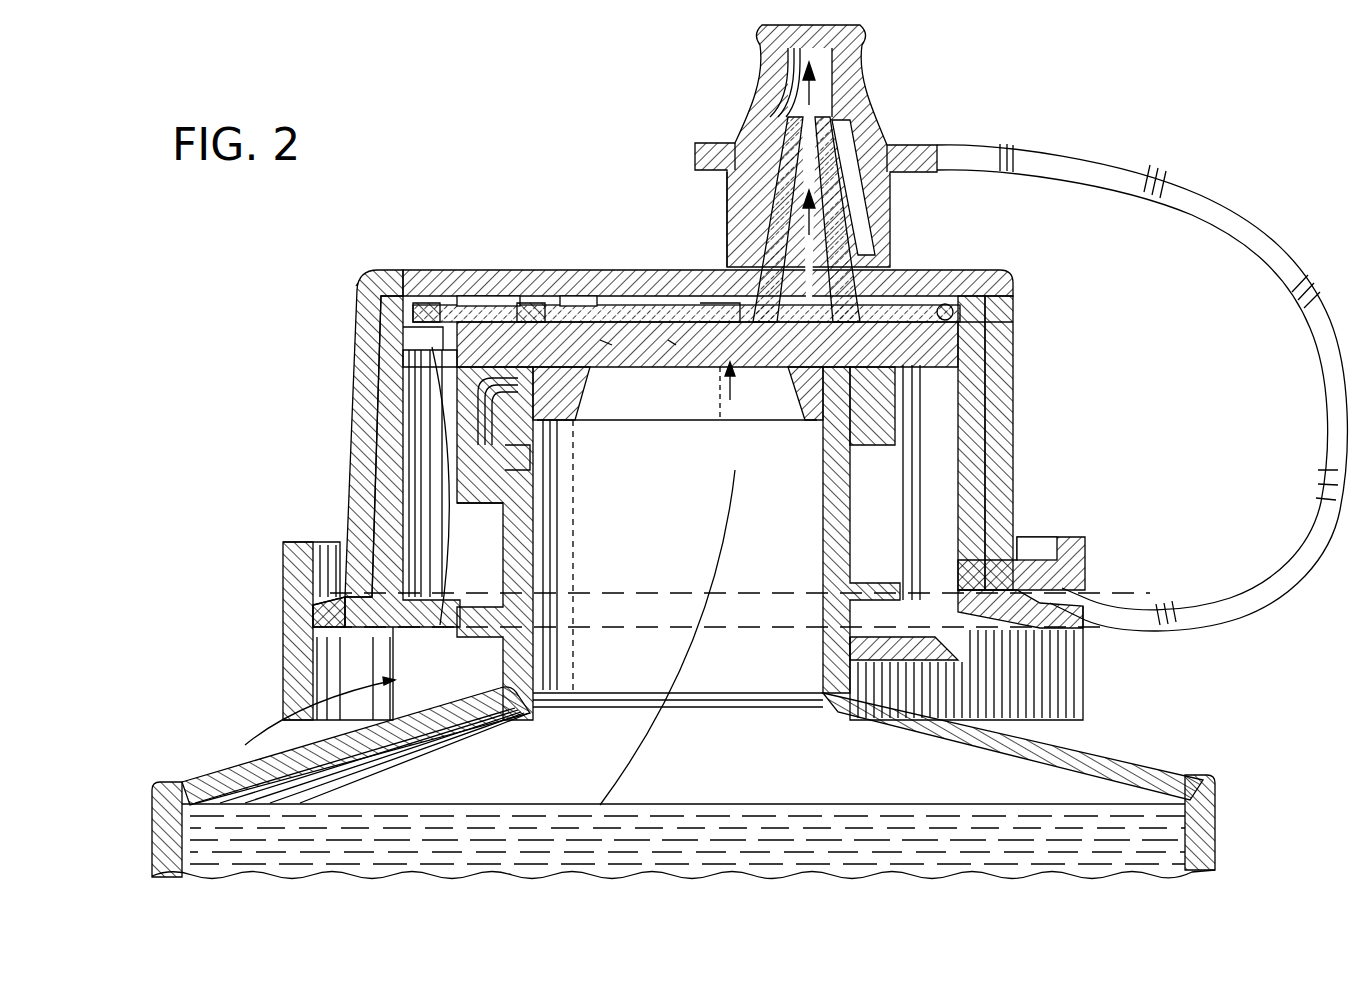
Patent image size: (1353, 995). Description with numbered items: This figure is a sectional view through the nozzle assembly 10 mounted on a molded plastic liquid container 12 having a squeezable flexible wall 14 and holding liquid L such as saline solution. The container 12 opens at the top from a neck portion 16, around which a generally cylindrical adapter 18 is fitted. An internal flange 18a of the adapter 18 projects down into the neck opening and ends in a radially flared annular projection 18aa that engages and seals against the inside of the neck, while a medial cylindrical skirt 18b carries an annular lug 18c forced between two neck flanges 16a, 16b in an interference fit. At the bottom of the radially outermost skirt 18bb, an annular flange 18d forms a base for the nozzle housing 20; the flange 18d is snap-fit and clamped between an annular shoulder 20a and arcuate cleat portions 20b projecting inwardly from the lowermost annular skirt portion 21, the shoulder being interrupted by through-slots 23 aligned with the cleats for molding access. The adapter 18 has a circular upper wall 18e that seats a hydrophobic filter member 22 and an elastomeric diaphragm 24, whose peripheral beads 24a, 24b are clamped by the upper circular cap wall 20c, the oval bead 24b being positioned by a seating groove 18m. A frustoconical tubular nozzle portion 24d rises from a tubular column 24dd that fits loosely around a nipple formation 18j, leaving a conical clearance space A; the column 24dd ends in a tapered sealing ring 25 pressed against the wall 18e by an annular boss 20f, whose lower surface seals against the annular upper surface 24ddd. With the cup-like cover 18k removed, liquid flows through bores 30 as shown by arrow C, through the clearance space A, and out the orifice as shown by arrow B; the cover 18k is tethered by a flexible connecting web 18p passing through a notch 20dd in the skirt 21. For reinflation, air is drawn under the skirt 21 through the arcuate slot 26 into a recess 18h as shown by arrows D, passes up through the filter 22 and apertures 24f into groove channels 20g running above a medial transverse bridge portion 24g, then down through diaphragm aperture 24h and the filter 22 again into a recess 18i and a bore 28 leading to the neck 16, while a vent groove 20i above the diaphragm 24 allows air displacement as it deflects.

The nozzle assembly 10 is at (400, 172).
The liquid container 12 is at (192, 770).
The flexible wall 14 is at (152, 866).
The neck portion 16 is at (508, 556).
The annular flange 16a is at (527, 468).
The annular flange 16b is at (527, 492).
The adapter 18 is at (375, 508).
The internal flange 18a is at (577, 420).
The radially flared annular projection 18aa is at (808, 428).
The medial cylindrical skirt 18b is at (385, 462).
The radially outermost skirt 18bb is at (965, 418).
The annular lug 18c is at (498, 506).
The annular flange 18d is at (338, 603).
The circular upper wall 18e is at (905, 350).
The recess 18h is at (440, 336).
The recess 18i is at (633, 374).
The nipple formation 18j is at (797, 374).
The cover 18k is at (742, 142).
The seating groove 18m is at (965, 328).
The connecting web 18p is at (1250, 598).
The nozzle housing 20 is at (1018, 466).
The annular shoulder 20a is at (1065, 578).
The cleat portions 20b is at (450, 655).
The upper circular cap wall 20c is at (612, 266).
The notch 20dd is at (1075, 657).
The annular boss 20f is at (845, 188).
The groove channels 20g is at (472, 297).
The vent groove 20i is at (952, 304).
The lowermost annular skirt portion 21 is at (290, 652).
The hydrophobic filter member 22 is at (674, 345).
The through-slots 23 is at (322, 546).
The elastomeric diaphragm 24 is at (662, 298).
The peripheral bead 24a is at (356, 286).
The peripheral bead 24b is at (722, 298).
The tubular nozzle portion 24d is at (840, 238).
The tubular column 24dd is at (862, 264).
The annular upper surface 24ddd is at (740, 250).
The apertures 24f is at (422, 300).
The medial transverse bridge portion 24g is at (524, 300).
The diaphragm aperture 24h is at (566, 297).
The tapered sealing ring 25 is at (745, 290).
The arcuate slot 26 is at (410, 358).
The bore 28 is at (605, 345).
The bores 30 is at (715, 391).
The clearance space A is at (797, 440).
The arrow B is at (832, 120).
The arrow C is at (733, 580).
The arrows D is at (442, 580).
The liquid L is at (778, 815).